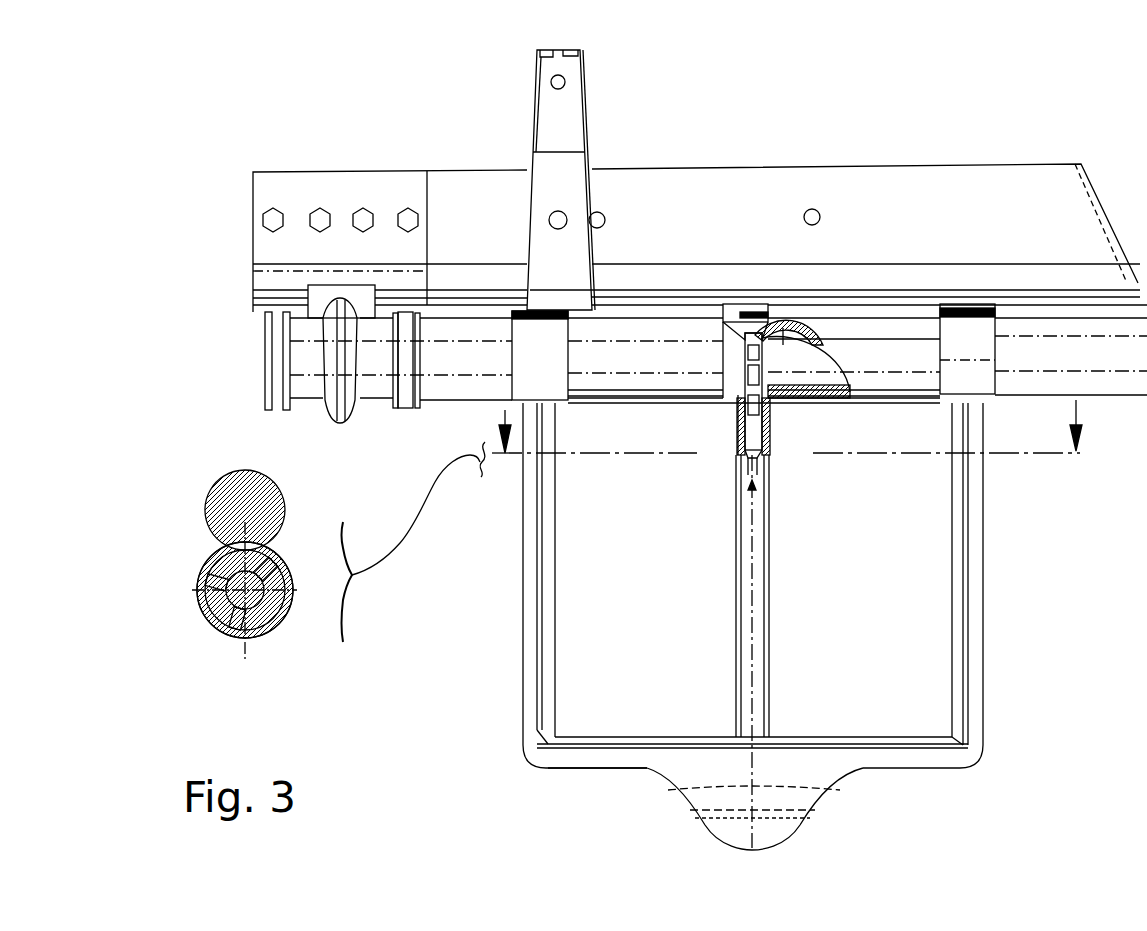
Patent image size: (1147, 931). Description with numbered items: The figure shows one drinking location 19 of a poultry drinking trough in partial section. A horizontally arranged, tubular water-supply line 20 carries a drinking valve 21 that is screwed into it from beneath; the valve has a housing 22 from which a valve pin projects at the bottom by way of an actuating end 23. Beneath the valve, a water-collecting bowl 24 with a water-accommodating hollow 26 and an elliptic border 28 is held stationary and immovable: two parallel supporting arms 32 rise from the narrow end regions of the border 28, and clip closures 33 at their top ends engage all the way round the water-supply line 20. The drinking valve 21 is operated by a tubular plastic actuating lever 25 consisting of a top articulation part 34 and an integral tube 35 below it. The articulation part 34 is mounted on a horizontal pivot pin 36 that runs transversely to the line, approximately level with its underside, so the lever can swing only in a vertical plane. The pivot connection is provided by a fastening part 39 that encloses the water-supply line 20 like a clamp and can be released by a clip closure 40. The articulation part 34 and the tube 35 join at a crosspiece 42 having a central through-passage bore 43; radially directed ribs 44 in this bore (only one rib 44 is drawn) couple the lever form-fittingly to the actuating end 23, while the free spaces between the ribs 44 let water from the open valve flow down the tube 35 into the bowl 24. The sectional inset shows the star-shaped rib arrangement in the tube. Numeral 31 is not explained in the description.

The drinking location 19 is at (432, 634).
The water-supply line 20 is at (1110, 359).
The drinking valve 21 is at (770, 402).
The housing 22 is at (821, 335).
The actuating end 23 is at (747, 478).
The water-collecting bowl 24 is at (600, 794).
The actuating lever 25 is at (800, 562).
The water-accommodating hollow 26 is at (802, 798).
The elliptic border 28 is at (912, 737).
The spring 31 is at (783, 328).
The supporting arm 32 is at (537, 680).
The clip closure 33 is at (976, 378).
The articulation part 34 is at (738, 395).
The tube 35 is at (737, 663).
The pivot pin 36 is at (714, 318).
The fastening part 39 is at (742, 340).
The clip closure 40 is at (769, 318).
The crosspiece 42 is at (735, 448).
The through-passage bore 43 is at (770, 470).
The rib 44 is at (735, 462).